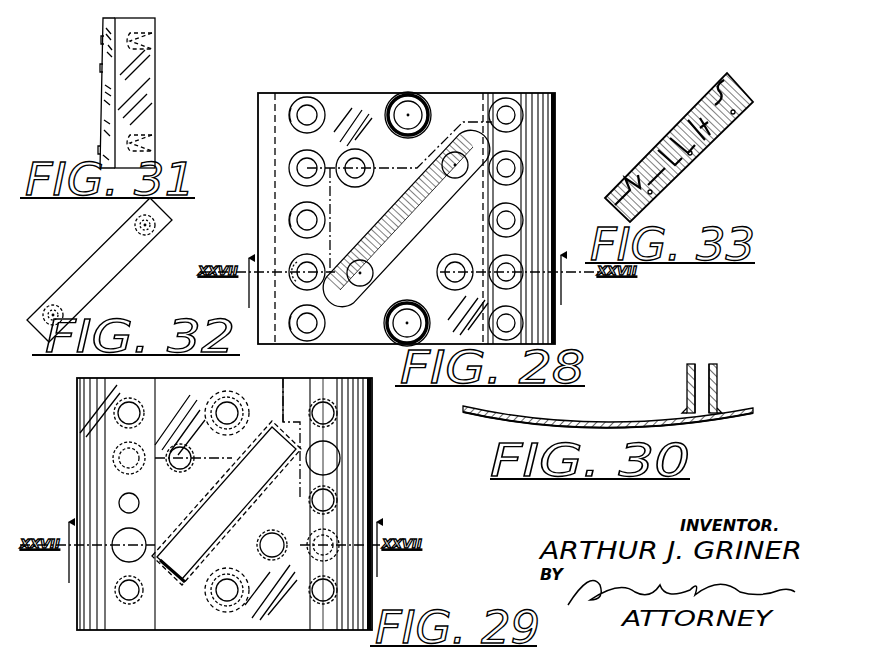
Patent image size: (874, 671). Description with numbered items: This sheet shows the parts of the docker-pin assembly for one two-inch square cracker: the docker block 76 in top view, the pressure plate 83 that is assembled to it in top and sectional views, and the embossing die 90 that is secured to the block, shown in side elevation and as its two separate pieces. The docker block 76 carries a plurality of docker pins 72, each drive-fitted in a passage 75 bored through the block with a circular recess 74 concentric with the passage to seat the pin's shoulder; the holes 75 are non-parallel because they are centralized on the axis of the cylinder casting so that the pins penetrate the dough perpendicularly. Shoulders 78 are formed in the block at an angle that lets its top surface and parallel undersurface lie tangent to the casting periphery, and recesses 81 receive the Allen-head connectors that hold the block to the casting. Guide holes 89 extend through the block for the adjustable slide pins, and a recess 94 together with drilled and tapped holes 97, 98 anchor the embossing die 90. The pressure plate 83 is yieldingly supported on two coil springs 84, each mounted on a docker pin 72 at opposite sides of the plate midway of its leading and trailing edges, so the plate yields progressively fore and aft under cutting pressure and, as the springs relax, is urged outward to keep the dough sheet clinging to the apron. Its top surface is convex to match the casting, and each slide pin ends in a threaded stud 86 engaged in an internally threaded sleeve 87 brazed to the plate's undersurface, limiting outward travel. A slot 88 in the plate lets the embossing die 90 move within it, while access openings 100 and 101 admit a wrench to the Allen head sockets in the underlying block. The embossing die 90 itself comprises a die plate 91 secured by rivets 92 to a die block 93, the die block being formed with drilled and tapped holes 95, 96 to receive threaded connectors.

In FIG. 28, the docker pins 72 is at (412, 112).
In FIG. 28, the circular recess 74 is at (311, 98).
In FIG. 28, the passage 75 is at (317, 121).
In FIG. 28, the docker block 76 is at (556, 168).
In FIG. 28, the shoulders 78 is at (258, 106).
In FIG. 28, the recesses 81 is at (308, 272).
In FIG. 29, the pressure plate 83 is at (372, 407).
In FIG. 30, the pressure plate 83 is at (754, 411).
In FIG. 28, the coil springs 84 is at (406, 92).
In FIG. 29, the coil springs 84 is at (242, 397).
In FIG. 29, the threaded stud 86 is at (118, 450).
In FIG. 29, the internally threaded sleeve 87 is at (113, 458).
In FIG. 30, the internally threaded sleeve 87 is at (718, 371).
In FIG. 29, the slot 88 is at (226, 501).
In FIG. 28, the guide hole 89 is at (316, 170).
In FIG. 31, the embossing die 90 is at (59, 117).
In FIG. 33, the embossing die 90 is at (658, 136).
In FIG. 33, the die plate 91 is at (690, 168).
In FIG. 31, the rivets 92 is at (103, 42).
In FIG. 33, the rivets 92 is at (736, 113).
In FIG. 31, the die block 93 is at (155, 92).
In FIG. 32, the die block 93 is at (100, 286).
In FIG. 28, the recess 94 is at (390, 215).
In FIG. 31, the drilled and tapped hole 95 is at (156, 146).
In FIG. 32, the drilled and tapped hole 95 is at (45, 305).
In FIG. 31, the drilled and tapped hole 96 is at (156, 41).
In FIG. 32, the drilled and tapped hole 96 is at (156, 228).
In FIG. 28, the drilled and tapped hole 97 is at (350, 278).
In FIG. 28, the drilled and tapped hole 98 is at (452, 160).
In FIG. 29, the access opening 100 is at (120, 535).
In FIG. 30, the access opening 100 is at (503, 423).
In FIG. 29, the access opening 101 is at (308, 459).